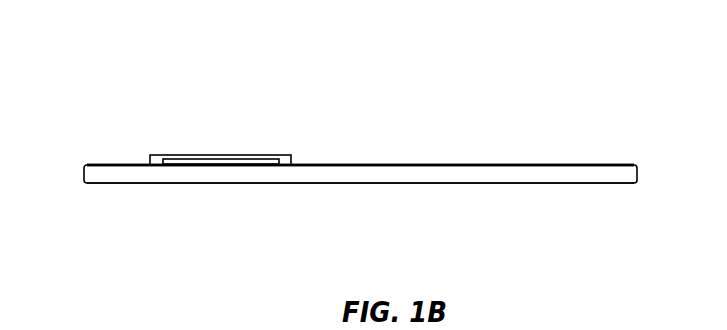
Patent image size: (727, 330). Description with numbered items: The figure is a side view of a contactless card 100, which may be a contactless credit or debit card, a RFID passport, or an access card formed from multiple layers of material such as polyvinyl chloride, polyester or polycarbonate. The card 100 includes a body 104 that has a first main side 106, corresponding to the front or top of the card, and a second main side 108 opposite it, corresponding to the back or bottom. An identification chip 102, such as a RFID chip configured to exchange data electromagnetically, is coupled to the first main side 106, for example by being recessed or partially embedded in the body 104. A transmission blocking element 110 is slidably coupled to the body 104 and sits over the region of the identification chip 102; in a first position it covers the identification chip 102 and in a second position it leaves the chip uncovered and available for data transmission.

The contactless card 100 is at (93, 128).
The identification chip 102 is at (197, 162).
The body 104 is at (407, 169).
The first main side 106 is at (568, 164).
The second main side 108 is at (543, 185).
The transmission blocking element 110 is at (285, 159).